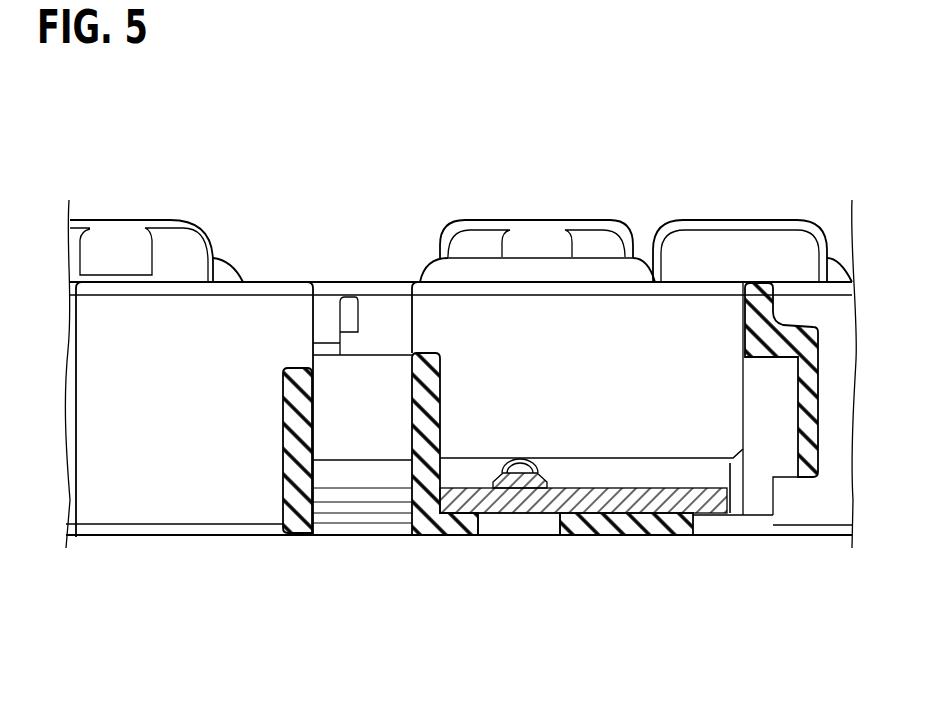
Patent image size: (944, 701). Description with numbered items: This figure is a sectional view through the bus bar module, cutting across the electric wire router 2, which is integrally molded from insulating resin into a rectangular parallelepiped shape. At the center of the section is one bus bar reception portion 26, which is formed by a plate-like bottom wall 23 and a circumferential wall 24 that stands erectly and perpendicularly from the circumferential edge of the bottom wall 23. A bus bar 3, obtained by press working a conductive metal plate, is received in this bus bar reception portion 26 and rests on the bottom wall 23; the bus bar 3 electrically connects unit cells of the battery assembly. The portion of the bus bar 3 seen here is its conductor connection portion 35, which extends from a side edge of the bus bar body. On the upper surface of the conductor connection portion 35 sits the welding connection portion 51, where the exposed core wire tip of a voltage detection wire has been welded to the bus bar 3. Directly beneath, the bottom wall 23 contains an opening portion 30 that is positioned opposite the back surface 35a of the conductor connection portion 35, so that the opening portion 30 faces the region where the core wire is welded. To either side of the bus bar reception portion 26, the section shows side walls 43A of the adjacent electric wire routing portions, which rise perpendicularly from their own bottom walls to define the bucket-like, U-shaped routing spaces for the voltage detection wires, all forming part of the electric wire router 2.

The electric wire router 2 is at (326, 553).
The bus bar 3 is at (656, 482).
The bottom wall 23 is at (465, 497).
The circumferential wall 24 is at (433, 383).
The bus bar reception portion 26 is at (591, 346).
The opening portion 30 is at (484, 523).
The conductor connection portion 35 is at (562, 490).
The back surface 35a is at (533, 520).
The side wall 43A is at (271, 316).
The welding connection portion 51 is at (519, 486).